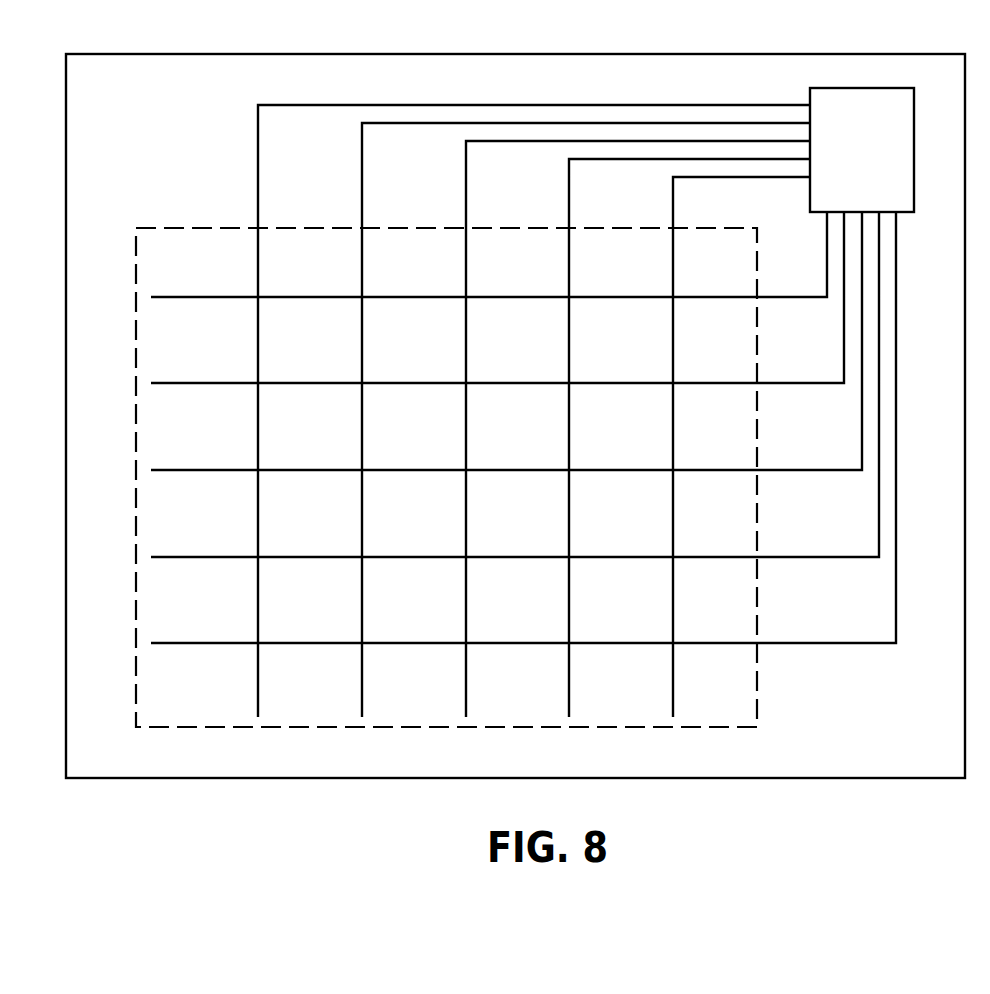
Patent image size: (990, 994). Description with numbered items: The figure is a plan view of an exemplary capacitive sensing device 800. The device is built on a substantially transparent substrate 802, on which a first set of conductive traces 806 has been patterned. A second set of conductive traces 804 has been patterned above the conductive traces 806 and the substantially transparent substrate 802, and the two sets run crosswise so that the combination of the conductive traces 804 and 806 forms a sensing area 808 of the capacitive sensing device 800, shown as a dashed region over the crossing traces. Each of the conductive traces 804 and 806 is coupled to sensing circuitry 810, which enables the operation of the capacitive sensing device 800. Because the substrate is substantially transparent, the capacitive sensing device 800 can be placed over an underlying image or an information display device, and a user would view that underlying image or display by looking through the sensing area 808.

The capacitive sensing device 800 is at (529, 31).
The substantially transparent substrate 802 is at (143, 152).
The second set of conductive traces 804 is at (904, 262).
The first set of conductive traces 806 is at (719, 88).
The sensing area 808 is at (263, 728).
The sensing circuitry 810 is at (843, 185).